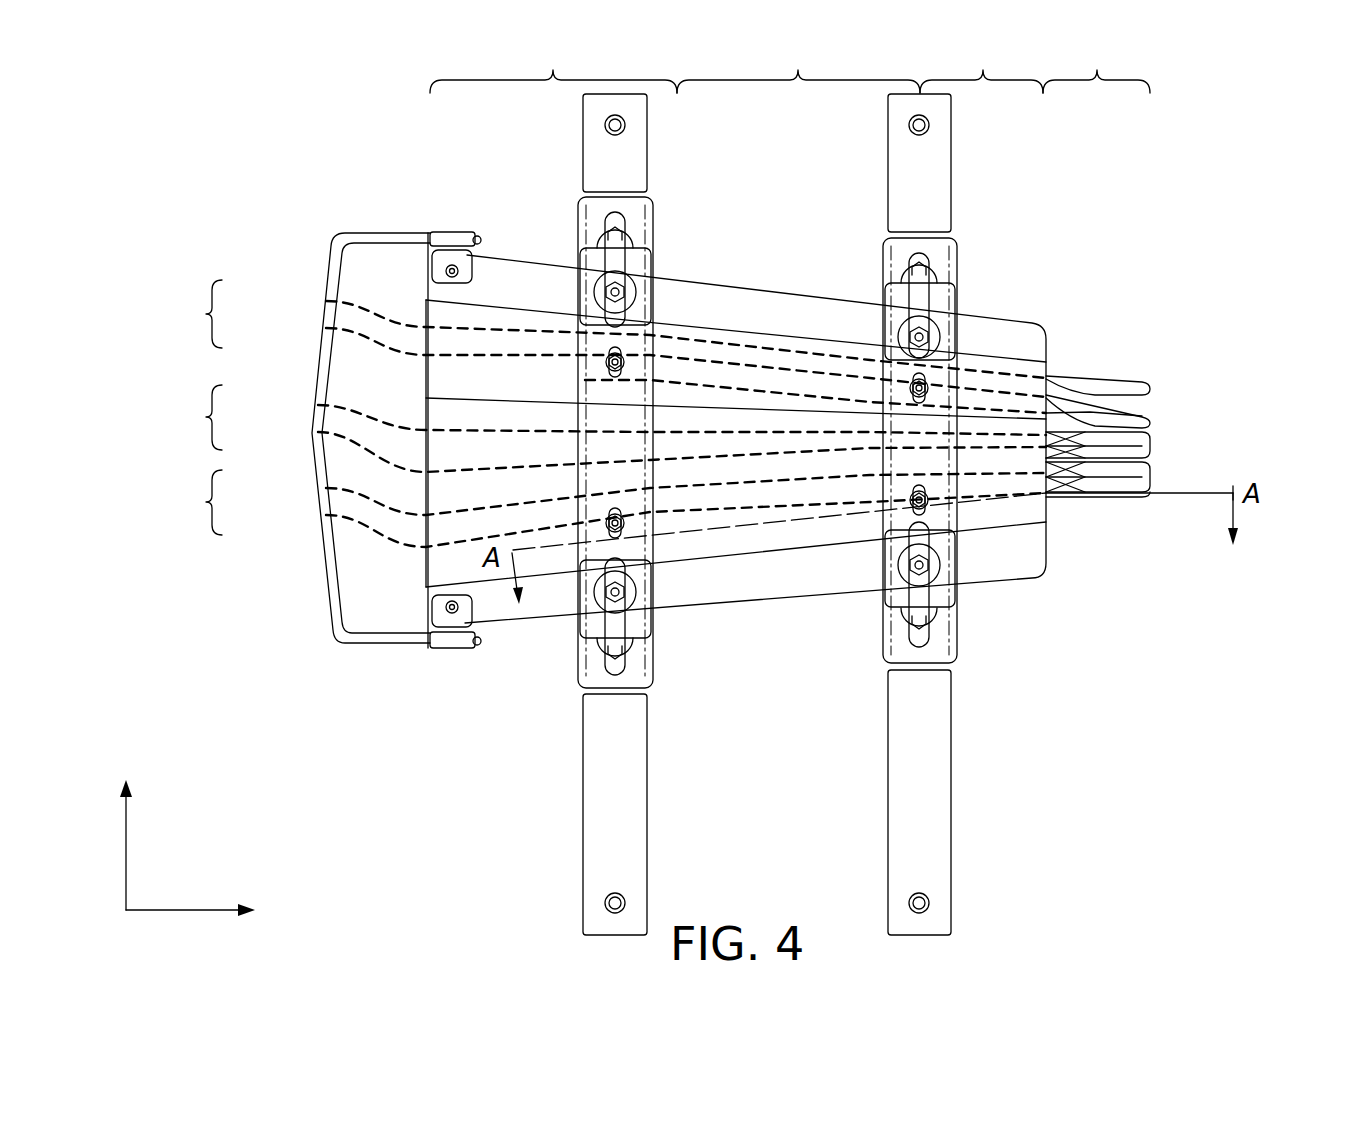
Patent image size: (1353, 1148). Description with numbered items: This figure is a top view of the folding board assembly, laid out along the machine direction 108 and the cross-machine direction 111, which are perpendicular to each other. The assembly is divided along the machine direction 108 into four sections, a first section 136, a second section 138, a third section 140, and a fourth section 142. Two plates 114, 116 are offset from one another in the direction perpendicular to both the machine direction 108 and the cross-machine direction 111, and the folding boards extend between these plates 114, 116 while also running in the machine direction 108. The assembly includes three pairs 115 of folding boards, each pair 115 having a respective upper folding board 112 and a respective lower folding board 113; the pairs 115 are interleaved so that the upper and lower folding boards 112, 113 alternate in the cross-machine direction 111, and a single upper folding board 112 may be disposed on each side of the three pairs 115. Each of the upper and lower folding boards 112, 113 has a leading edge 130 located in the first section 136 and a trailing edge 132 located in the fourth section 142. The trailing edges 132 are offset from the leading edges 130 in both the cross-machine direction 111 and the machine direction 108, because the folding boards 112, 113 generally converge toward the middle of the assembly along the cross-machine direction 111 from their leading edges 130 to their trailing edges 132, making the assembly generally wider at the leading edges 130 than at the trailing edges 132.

The machine direction 108 is at (219, 910).
The cross-machine direction 111 is at (135, 826).
The upper folding board 112 is at (326, 328).
The lower folding board 113 is at (326, 301).
The plate 114 is at (1037, 512).
The pair of folding boards 115 is at (185, 407).
The plate 116 is at (1040, 560).
The leading edge 130 is at (568, 308).
The trailing edge 132 is at (1178, 378).
The first section 136 is at (553, 66).
The second section 138 is at (798, 66).
The third section 140 is at (981, 66).
The fourth section 142 is at (1096, 66).